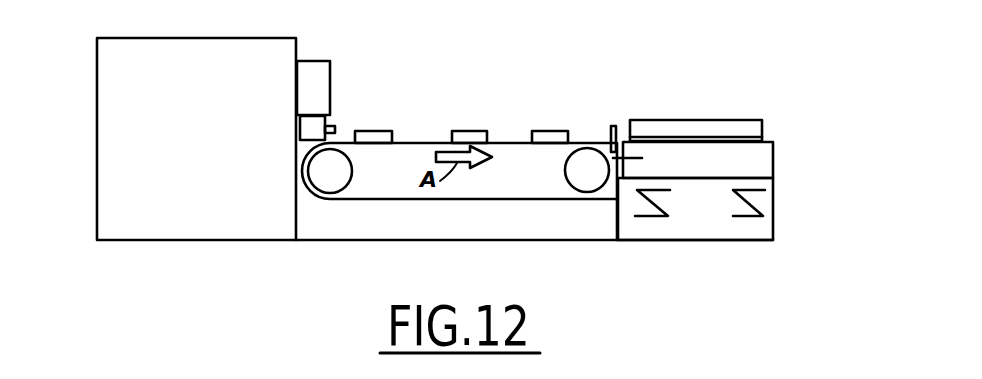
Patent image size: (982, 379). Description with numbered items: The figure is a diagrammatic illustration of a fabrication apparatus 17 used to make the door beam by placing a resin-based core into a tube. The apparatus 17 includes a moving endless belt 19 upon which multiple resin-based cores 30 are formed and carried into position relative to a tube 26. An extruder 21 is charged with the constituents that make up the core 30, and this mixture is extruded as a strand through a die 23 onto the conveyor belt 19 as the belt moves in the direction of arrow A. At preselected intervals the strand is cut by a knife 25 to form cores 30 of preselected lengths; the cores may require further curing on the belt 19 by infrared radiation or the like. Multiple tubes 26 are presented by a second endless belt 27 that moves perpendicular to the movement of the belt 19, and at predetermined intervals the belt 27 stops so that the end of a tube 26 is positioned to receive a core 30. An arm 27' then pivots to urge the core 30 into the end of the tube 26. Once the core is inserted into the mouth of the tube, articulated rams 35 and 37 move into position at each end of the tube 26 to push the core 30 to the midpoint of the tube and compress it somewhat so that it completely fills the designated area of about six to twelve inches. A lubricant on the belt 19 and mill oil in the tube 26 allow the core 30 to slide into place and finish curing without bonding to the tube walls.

The fabrication apparatus 17 is at (490, 85).
The endless belt 19 is at (412, 140).
The extruder 21 is at (216, 38).
The die 23 is at (300, 130).
The knife 25 is at (332, 76).
The tube 26 is at (727, 118).
The second endless belt 27 is at (729, 152).
The arm 27' is at (641, 116).
The resin-based core 30 is at (546, 129).
The articulated ram 35 is at (748, 219).
The articulated ram 37 is at (660, 219).